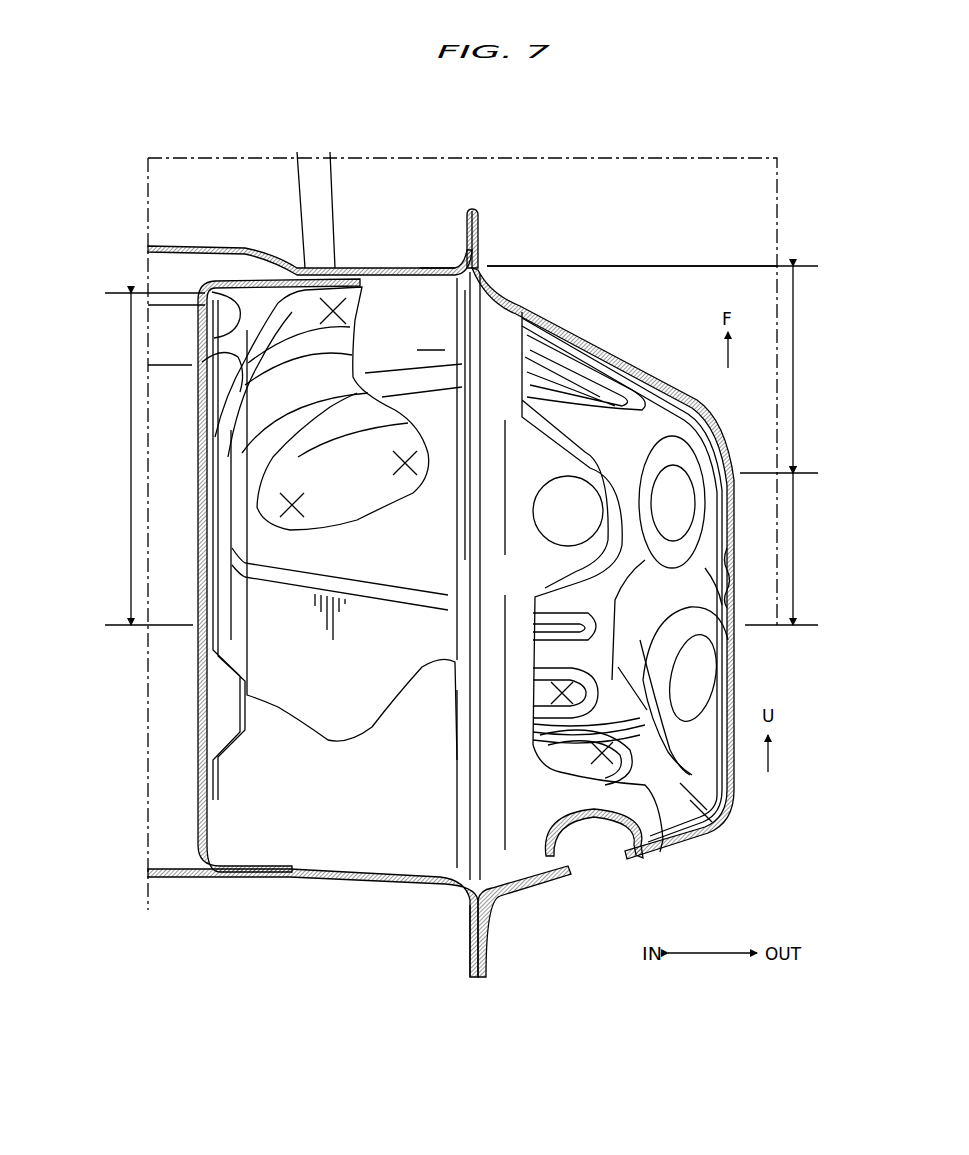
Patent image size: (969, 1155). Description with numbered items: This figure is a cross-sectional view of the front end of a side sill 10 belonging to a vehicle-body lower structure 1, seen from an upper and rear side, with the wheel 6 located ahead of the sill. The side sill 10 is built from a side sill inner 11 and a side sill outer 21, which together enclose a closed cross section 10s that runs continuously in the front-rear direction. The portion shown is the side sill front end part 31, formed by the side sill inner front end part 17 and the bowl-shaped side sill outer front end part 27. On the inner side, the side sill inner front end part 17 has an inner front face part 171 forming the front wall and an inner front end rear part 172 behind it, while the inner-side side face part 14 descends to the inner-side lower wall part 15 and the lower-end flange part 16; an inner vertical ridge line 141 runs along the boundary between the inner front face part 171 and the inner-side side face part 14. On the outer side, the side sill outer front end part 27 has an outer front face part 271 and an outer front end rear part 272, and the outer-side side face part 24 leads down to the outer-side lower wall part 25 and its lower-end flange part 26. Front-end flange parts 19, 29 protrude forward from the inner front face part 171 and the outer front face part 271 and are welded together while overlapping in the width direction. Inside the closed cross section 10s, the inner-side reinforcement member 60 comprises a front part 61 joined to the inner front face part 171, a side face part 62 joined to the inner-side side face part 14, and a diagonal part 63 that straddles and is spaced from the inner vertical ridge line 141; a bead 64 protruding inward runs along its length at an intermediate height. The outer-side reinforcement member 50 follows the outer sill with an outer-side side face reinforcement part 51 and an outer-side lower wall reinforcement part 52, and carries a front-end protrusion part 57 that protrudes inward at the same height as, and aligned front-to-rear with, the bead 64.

The wheel 6 is at (297, 196).
The side sill inner front end part 17 is at (310, 232).
The side sill inner 11 is at (265, 240).
The inner vertical ridge line 141 is at (230, 288).
The inner front face part 171 is at (433, 267).
The front-end flange part 19 is at (466, 222).
The front-end flange part 29 is at (479, 232).
The side sill 10 is at (579, 523).
The vehicle-body lower structure 1 is at (644, 216).
The side sill front end part 31 is at (680, 252).
The side sill outer front end part 27 is at (603, 563).
The side sill outer 21 is at (640, 336).
The inner-side reinforcement member front part 61 is at (353, 318).
The closed cross section 10s is at (413, 363).
The front-end protrusion part 57 is at (606, 528).
The diagonal part 63 is at (216, 360).
The bead 64 is at (308, 400).
The inner front end rear part 172 is at (148, 459).
The inner-side side face part 14 is at (198, 496).
The inner-side reinforcement member side face part 62 is at (236, 523).
The inner-side reinforcement member 60 is at (367, 502).
The outer front face part 271 is at (784, 369).
The outer-side side face part 24 is at (736, 555).
The outer-side side face reinforcement part 51 is at (724, 610).
The outer front end rear part 272 is at (786, 549).
The outer-side reinforcement member 50 is at (556, 776).
The outer-side lower wall reinforcement part 52 is at (664, 848).
The inner-side lower wall part 15 is at (372, 878).
The lower-end flange part 16 is at (470, 942).
The lower-end flange part 26 is at (487, 946).
The outer-side lower wall part 25 is at (556, 878).